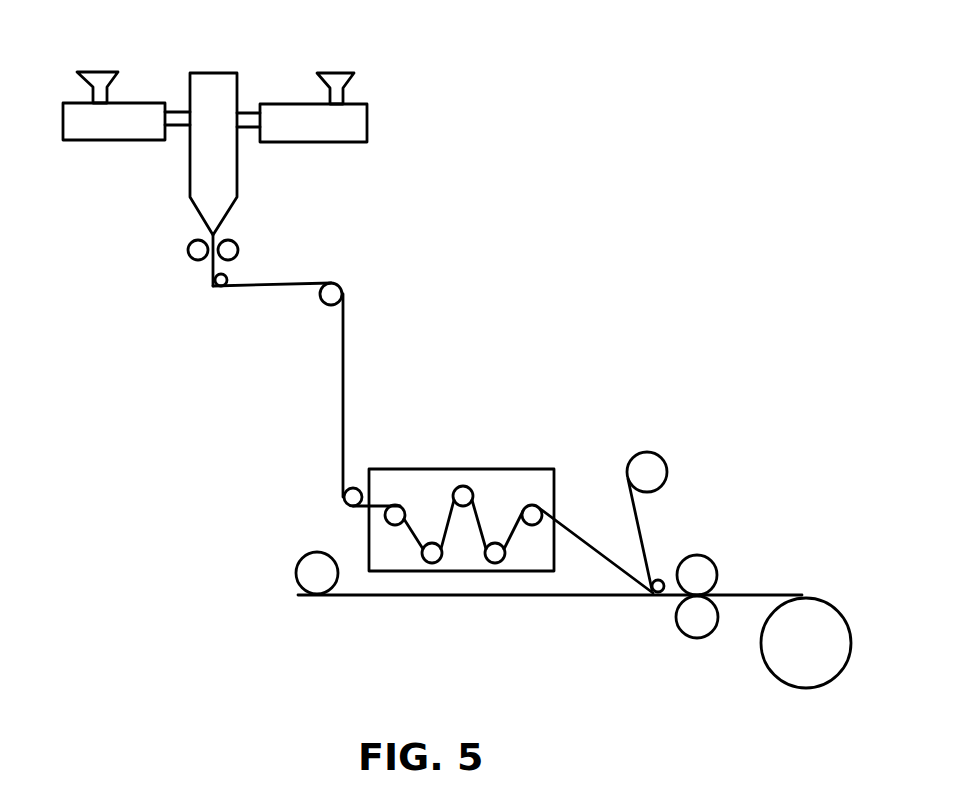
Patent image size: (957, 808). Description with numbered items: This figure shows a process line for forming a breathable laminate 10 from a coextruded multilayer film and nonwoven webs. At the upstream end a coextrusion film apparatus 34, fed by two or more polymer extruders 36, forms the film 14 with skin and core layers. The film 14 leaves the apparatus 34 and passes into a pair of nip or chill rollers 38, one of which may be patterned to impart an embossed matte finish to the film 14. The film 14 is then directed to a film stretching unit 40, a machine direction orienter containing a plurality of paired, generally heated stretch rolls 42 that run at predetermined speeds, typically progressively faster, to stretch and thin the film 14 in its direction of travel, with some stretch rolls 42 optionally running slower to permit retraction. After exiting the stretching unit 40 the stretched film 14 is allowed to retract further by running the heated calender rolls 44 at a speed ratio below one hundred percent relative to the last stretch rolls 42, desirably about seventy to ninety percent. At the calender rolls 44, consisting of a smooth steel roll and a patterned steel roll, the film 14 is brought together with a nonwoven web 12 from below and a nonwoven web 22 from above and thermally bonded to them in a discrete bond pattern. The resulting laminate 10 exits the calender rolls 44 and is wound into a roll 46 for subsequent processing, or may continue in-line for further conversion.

The laminate 10 is at (768, 593).
The nonwoven web 12 is at (365, 597).
The film 14 is at (265, 287).
The nonwoven web 22 is at (638, 516).
The coextrusion film apparatus 34 is at (213, 87).
The polymer extruders 36 is at (63, 117).
The nip or chill rollers 38 is at (187, 250).
The film stretching unit 40 is at (488, 462).
The stretch rolls 42 is at (400, 495).
The heated calender rolls 44 is at (710, 553).
The roll 46 is at (838, 675).